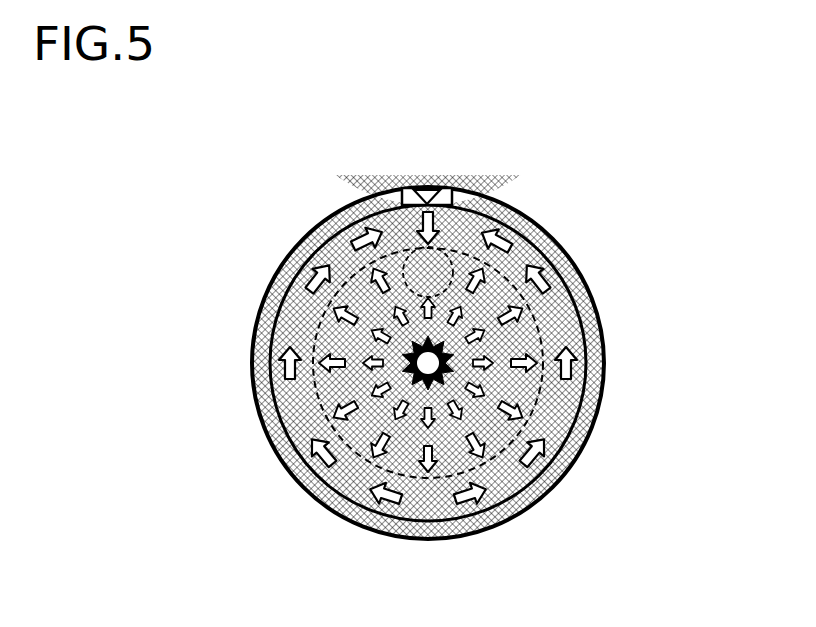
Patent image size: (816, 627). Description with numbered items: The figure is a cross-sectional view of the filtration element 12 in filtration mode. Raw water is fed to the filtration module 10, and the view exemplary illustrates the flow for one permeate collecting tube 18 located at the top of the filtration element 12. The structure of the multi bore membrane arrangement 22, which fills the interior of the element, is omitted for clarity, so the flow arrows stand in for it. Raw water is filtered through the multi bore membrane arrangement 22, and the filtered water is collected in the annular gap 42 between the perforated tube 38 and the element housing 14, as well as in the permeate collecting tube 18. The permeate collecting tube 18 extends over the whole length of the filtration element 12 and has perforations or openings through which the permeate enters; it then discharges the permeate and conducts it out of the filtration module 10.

The filtration module 10 is at (594, 219).
The filtration element 12 is at (552, 331).
The element housing 14 is at (592, 306).
The permeate collecting tube 18 is at (445, 250).
The multi bore membrane arrangement 22 is at (493, 432).
The perforated tube 38 is at (540, 393).
The annular gap 42 is at (295, 410).